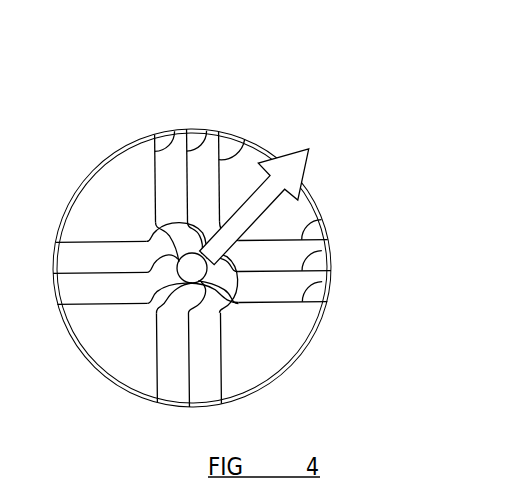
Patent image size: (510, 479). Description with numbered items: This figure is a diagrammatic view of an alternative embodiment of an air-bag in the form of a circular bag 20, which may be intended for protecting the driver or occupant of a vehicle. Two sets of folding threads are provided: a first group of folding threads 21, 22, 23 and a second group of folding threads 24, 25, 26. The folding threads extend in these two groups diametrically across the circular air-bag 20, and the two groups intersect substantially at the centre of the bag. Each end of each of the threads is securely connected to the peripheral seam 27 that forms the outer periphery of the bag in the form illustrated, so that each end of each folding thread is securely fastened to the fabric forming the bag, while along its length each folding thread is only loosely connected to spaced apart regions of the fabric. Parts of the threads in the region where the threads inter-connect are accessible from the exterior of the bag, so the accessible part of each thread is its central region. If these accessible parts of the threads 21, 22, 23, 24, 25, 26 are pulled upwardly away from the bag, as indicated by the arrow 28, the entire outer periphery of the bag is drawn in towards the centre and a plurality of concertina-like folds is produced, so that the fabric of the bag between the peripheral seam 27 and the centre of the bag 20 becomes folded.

The circular bag 20 is at (98, 144).
The folding thread 21 is at (172, 142).
The folding thread 22 is at (207, 142).
The folding thread 23 is at (245, 148).
The folding thread 24 is at (323, 222).
The folding thread 25 is at (325, 255).
The folding thread 26 is at (325, 287).
The peripheral seam 27 is at (115, 385).
The arrow 28 is at (293, 152).